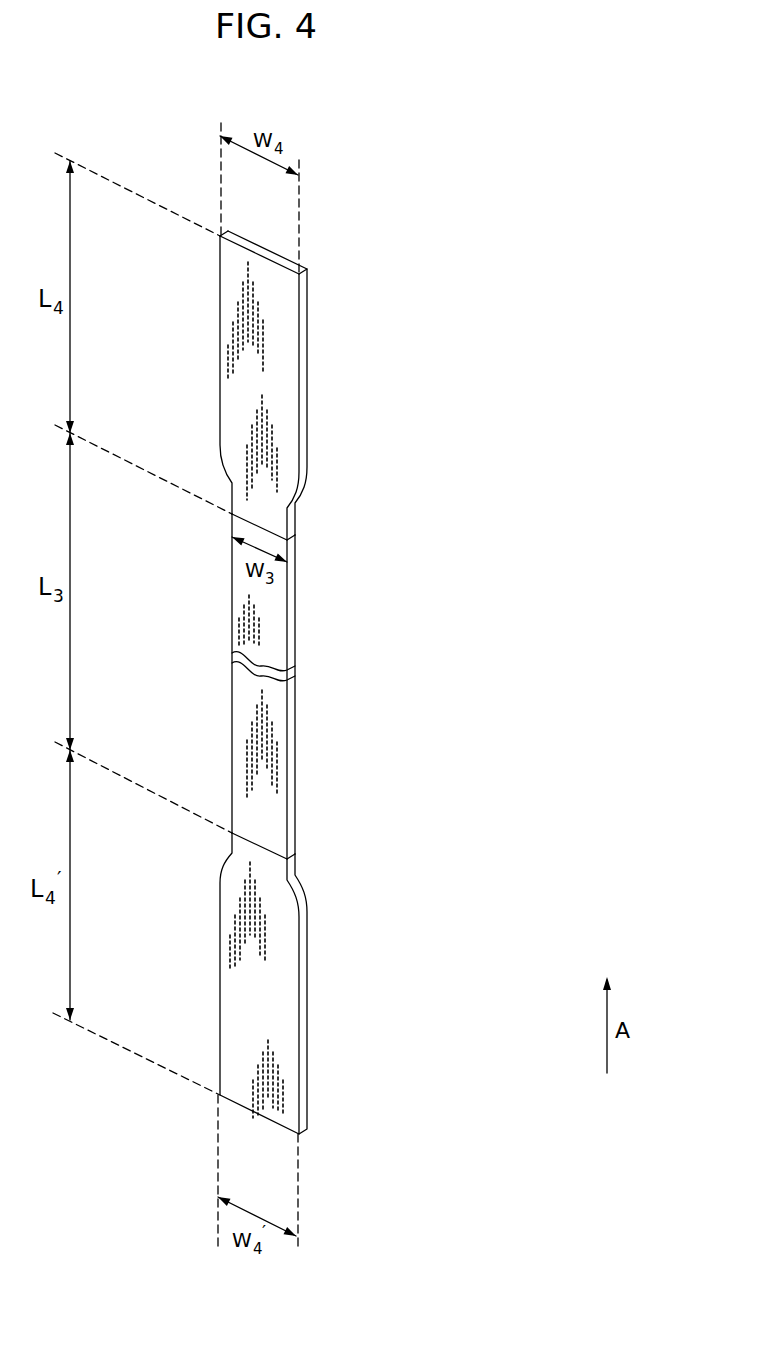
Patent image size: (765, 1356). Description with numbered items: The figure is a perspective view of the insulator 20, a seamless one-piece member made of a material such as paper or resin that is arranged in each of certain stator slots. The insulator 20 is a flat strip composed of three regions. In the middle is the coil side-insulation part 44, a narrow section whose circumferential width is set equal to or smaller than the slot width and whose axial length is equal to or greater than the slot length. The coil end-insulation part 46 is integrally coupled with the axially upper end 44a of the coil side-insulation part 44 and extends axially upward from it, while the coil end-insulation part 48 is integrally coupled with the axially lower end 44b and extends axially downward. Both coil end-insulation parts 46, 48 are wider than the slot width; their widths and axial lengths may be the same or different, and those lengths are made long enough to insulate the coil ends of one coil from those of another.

The insulator 20 is at (435, 218).
The coil side-insulation part 44 is at (273, 620).
The axially upper end 44a is at (258, 526).
The axially lower end 44b is at (266, 855).
The coil end-insulation part 46 is at (275, 377).
The coil end-insulation part 48 is at (274, 1005).